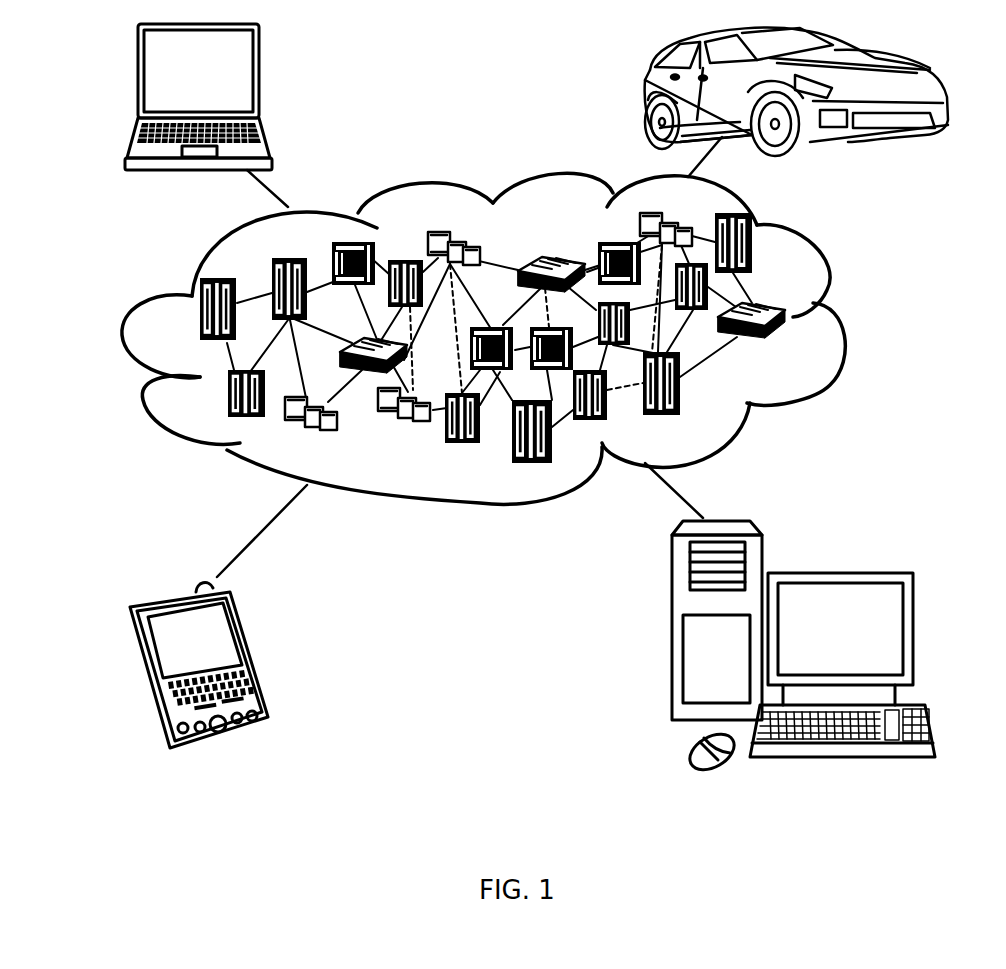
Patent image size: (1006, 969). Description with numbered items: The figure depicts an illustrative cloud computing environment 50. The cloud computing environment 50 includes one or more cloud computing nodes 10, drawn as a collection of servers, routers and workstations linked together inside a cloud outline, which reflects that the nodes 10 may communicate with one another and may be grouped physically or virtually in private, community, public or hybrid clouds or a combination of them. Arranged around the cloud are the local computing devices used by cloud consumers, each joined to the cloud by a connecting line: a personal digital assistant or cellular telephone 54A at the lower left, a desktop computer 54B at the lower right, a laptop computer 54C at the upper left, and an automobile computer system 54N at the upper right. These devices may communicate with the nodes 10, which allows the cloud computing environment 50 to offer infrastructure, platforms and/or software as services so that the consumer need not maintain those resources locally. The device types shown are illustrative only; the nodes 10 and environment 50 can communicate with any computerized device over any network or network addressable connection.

The cloud computing nodes 10 is at (800, 349).
The cloud computing environment 50 is at (838, 318).
The personal digital assistant or cellular telephone 54A is at (253, 654).
The desktop computer 54B is at (838, 573).
The laptop computer 54C is at (259, 79).
The automobile computer system 54N is at (642, 88).